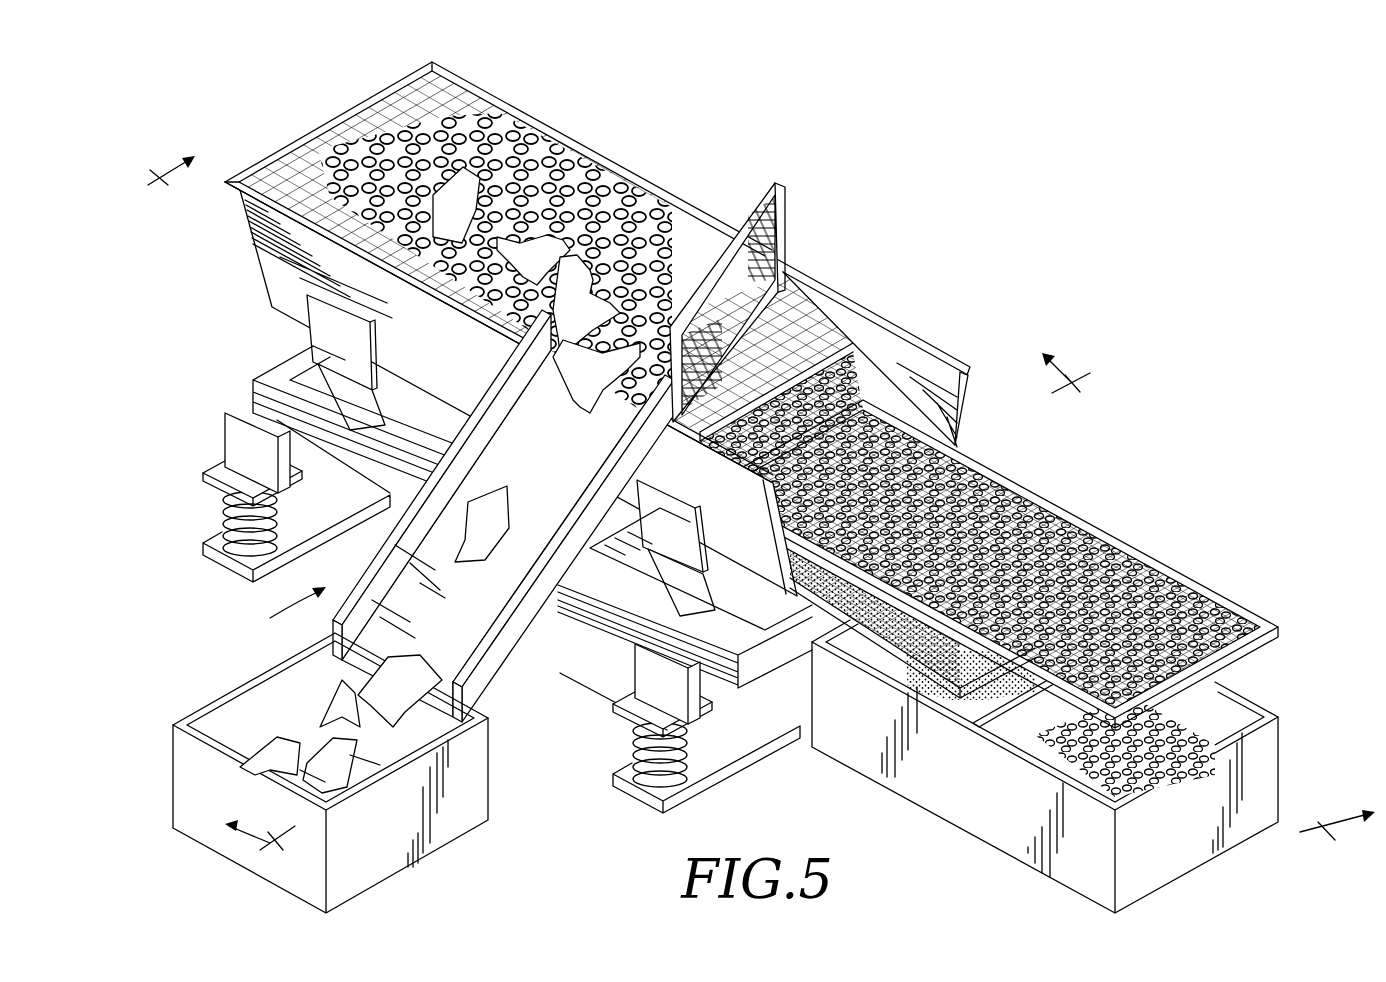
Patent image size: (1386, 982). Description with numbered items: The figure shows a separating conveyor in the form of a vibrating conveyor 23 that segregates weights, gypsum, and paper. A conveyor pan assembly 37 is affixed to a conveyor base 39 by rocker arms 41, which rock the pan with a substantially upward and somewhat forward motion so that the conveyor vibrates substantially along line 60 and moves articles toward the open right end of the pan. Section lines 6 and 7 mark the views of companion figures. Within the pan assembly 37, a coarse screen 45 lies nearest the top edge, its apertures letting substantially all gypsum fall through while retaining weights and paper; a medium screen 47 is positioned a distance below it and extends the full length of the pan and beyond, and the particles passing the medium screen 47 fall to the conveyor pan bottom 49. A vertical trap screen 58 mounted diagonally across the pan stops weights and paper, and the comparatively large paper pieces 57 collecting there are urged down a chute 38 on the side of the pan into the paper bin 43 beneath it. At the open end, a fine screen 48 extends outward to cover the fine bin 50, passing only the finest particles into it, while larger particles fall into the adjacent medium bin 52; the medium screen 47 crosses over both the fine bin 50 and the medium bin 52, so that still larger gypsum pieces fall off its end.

The vibrating conveyor 23 is at (277, 611).
The conveyor pan assembly 37 is at (280, 267).
The chute 38 is at (503, 640).
The conveyor base 39 is at (603, 605).
The rocker arms 41 is at (387, 392).
The paper bin 43 is at (472, 798).
The coarse screen 45 is at (437, 120).
The medium screen 47 is at (1117, 553).
The fine screen 48 is at (973, 678).
The conveyor pan bottom 49 is at (788, 548).
The fine bin 50 is at (893, 667).
The medium bin 52 is at (1067, 766).
The paper pieces 57 is at (537, 250).
The trap screen 58 is at (777, 247).
The vibration direction line 60 is at (975, 469).
The section line 6- 6 is at (750, 513).
The section line 7- 7 is at (669, 613).